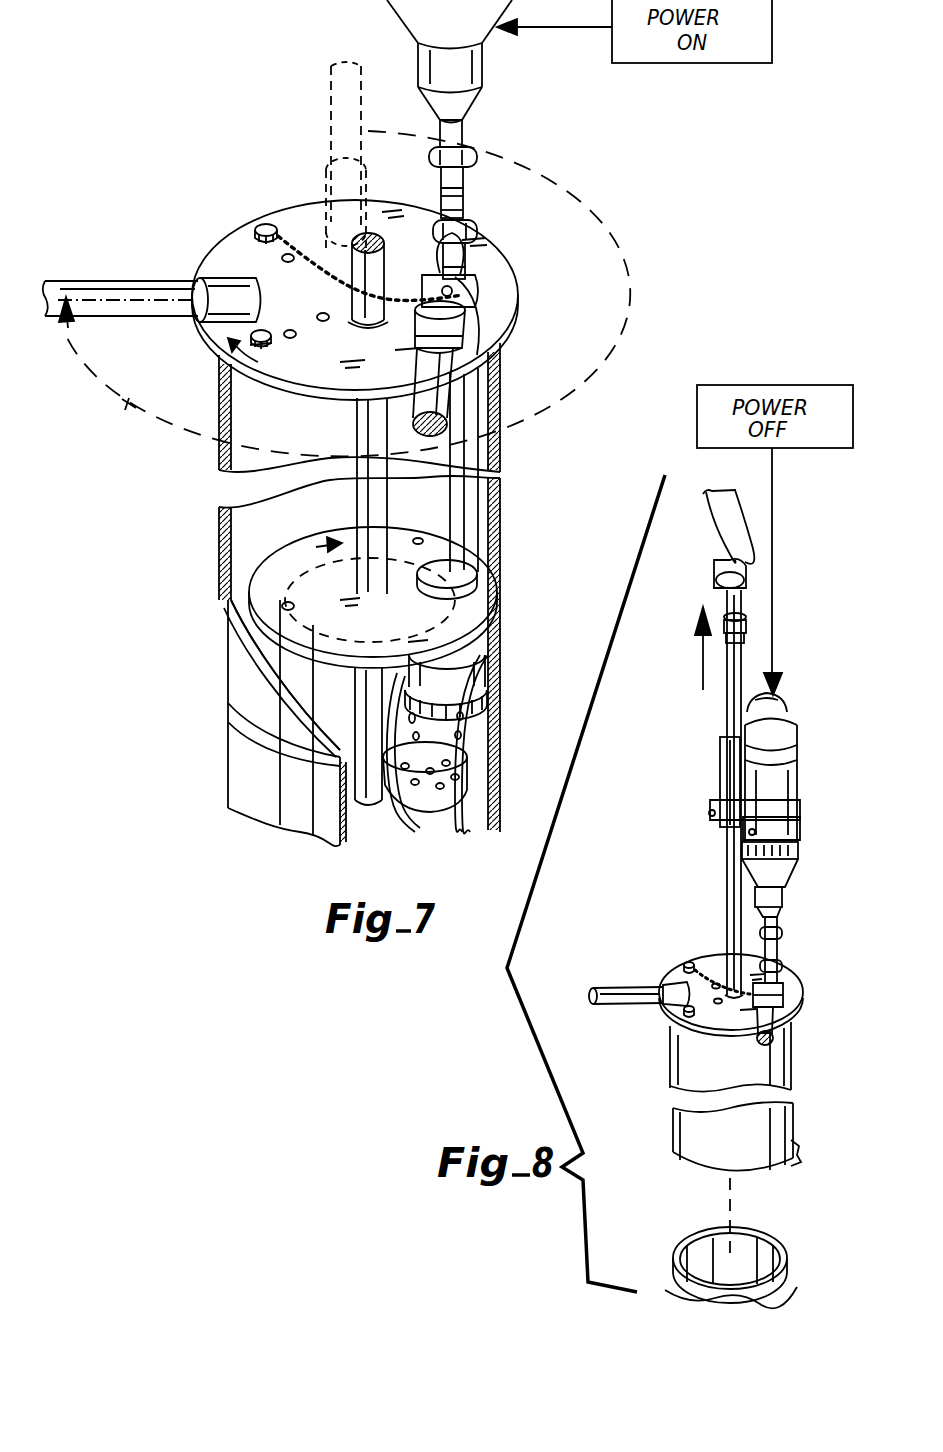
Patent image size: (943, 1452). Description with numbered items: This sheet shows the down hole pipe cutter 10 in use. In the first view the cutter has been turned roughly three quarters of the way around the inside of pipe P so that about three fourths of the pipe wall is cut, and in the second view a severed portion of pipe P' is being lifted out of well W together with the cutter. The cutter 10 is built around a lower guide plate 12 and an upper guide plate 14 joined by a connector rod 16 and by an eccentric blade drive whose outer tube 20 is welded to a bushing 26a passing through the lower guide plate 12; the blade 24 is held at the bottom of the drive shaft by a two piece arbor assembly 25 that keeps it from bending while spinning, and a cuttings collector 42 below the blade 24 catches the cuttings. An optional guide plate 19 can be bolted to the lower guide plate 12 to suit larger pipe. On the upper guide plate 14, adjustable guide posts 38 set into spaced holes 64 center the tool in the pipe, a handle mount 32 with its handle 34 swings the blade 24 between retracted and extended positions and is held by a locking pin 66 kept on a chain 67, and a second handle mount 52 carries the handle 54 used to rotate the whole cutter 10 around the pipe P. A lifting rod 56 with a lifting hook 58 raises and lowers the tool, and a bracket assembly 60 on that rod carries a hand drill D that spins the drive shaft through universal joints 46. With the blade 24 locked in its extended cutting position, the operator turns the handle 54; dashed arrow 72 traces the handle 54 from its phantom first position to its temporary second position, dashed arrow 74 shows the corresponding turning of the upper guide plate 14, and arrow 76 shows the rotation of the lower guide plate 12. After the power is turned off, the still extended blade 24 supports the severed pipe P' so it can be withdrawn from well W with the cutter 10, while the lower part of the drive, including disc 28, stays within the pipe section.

In FIG. 7, the down hole pipe cutter 10 is at (616, 175).
In FIG. 8, the down hole pipe cutter 10 is at (855, 838).
In FIG. 7, the lower guide plate 12 is at (463, 613).
In FIG. 7, the upper guide plate 14 is at (490, 265).
In FIG. 8, the upper guide plate 14 is at (795, 950).
In FIG. 7, the connector rod 16 is at (358, 496).
In FIG. 7, the guide plate 19 is at (252, 588).
In FIG. 7, the outer tube 20 is at (463, 413).
In FIG. 7, the blade 24 is at (488, 688).
In FIG. 8, the blade 24 is at (798, 1152).
In FIG. 7, the arbor assembly 25 is at (478, 676).
In FIG. 7, the bushing 26a is at (437, 600).
In FIG. 7, the drive disc 28 is at (440, 578).
In FIG. 7, the handle mount 32 is at (457, 320).
In FIG. 8, the handle mount 32 is at (788, 986).
In FIG. 7, the handle 34 is at (440, 393).
In FIG. 8, the handle 34 is at (778, 1030).
In FIG. 7, the adjustable guide posts 38 is at (266, 224).
In FIG. 8, the adjustable guide posts 38 is at (687, 956).
In FIG. 7, the cuttings collector 42 is at (418, 812).
In FIG. 7, the universal joints 46 is at (495, 180).
In FIG. 8, the universal joints 46 is at (795, 915).
In FIG. 7, the second handle mount 52 is at (330, 182).
In FIG. 8, the second handle mount 52 is at (664, 1000).
In FIG. 7, the handle 54 is at (330, 118).
In FIG. 8, the handle 54 is at (612, 990).
In FIG. 7, the lifting rod 56 is at (352, 298).
In FIG. 8, the lifting rod 56 is at (728, 872).
In FIG. 8, the lifting hook 58 is at (717, 590).
In FIG. 8, the bracket assembly 60 is at (706, 740).
In FIG. 7, the spaced holes 64 is at (282, 258).
In FIG. 8, the spaced holes 64 is at (690, 986).
In FIG. 7, the locking pin 66 is at (495, 284).
In FIG. 7, the chain 67 is at (405, 298).
In FIG. 8, the chain 67 is at (721, 988).
In FIG. 7, the dashed arrow 72 is at (126, 410).
In FIG. 7, the dashed arrow 74 is at (295, 388).
In FIG. 7, the arrow 76 is at (370, 589).
In FIG. 7, the hand drill D is at (465, 60).
In FIG. 8, the hand drill D is at (788, 770).
In FIG. 7, the pipe P is at (355, 666).
In FIG. 8, the severed portion of pipe P' is at (751, 1096).
In FIG. 8, the well W is at (660, 1246).